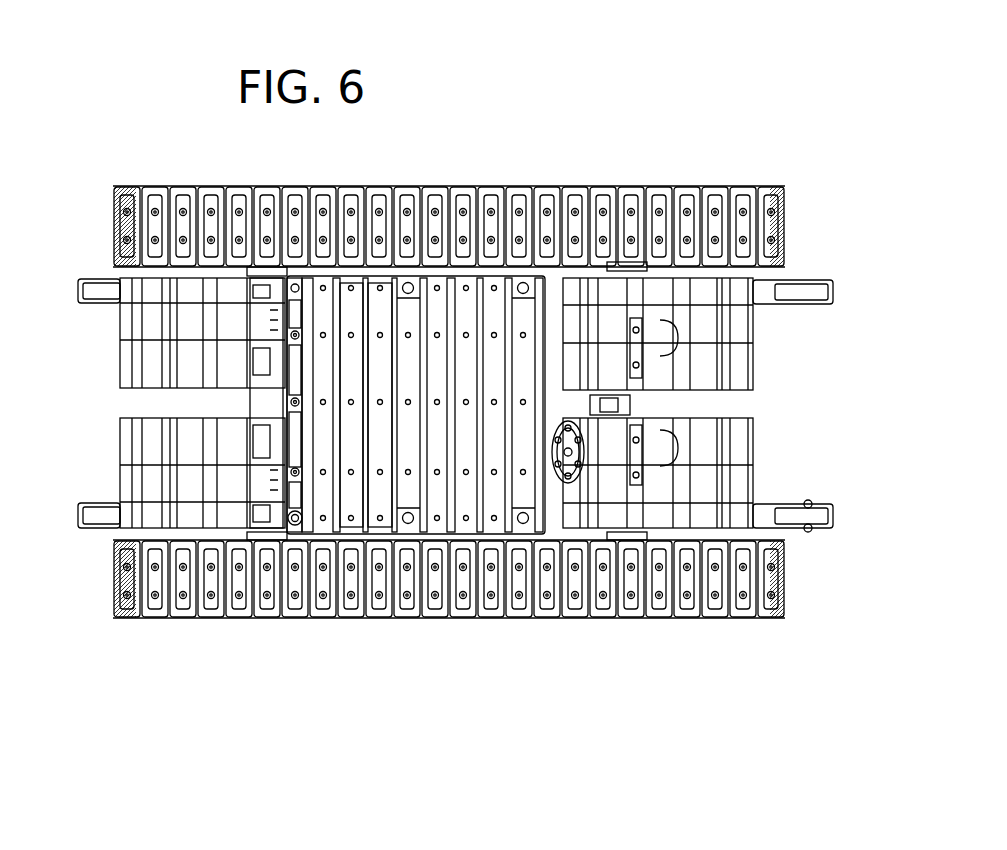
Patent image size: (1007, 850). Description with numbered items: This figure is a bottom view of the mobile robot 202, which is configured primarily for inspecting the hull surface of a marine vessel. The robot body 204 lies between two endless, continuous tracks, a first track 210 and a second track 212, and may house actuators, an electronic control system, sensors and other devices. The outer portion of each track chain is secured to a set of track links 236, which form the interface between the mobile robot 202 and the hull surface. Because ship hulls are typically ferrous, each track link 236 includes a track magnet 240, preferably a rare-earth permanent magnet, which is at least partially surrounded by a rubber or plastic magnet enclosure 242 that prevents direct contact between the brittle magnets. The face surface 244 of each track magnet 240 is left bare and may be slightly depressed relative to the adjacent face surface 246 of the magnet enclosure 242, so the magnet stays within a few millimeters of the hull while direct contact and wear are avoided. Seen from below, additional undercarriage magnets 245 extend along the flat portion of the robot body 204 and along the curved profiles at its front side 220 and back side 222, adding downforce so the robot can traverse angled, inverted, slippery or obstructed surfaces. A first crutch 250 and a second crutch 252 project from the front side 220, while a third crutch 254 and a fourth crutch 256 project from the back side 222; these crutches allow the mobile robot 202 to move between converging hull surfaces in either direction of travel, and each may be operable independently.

The mobile robot 202 is at (620, 92).
The robot body 204 is at (555, 318).
The first track 210 is at (765, 188).
The second track 212 is at (752, 615).
The front side 220 is at (732, 180).
The back side 222 is at (147, 168).
The track links 236 is at (167, 605).
The track magnet 240 is at (398, 578).
The magnet enclosure 242 is at (390, 607).
The face surface of track magnet 244 is at (515, 585).
The undercarriage magnets 245 is at (373, 445).
The face surface of magnet enclosure 246 is at (510, 620).
The first crutch 250 is at (763, 305).
The second crutch 252 is at (768, 500).
The third crutch 254 is at (127, 310).
The fourth crutch 256 is at (120, 485).